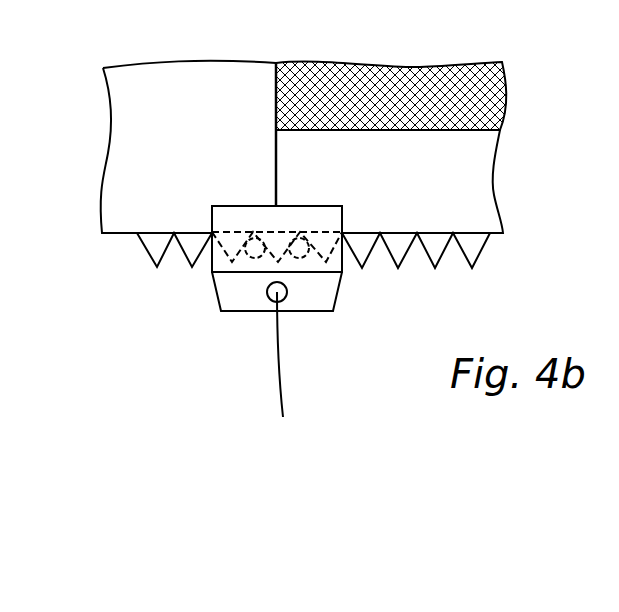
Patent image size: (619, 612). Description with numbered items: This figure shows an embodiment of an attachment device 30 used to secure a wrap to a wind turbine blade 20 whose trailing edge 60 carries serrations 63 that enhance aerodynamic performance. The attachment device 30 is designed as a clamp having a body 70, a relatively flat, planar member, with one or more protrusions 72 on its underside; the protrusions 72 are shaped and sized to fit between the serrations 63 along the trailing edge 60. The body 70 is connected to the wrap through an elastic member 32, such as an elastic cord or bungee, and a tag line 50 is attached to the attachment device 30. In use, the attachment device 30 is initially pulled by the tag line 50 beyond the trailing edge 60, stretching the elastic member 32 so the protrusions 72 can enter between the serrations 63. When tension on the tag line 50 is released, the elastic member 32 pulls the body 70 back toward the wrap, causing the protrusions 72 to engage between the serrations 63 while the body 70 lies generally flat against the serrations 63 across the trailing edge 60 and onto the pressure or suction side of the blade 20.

The wind turbine blade 20 is at (428, 65).
The attachment device 30 is at (330, 188).
The elastic member 32 is at (275, 147).
The tag line 50 is at (281, 372).
The trailing edge 60 is at (113, 233).
The serrations 63 is at (420, 254).
The body 70 is at (211, 222).
The protrusion 72 is at (312, 248).